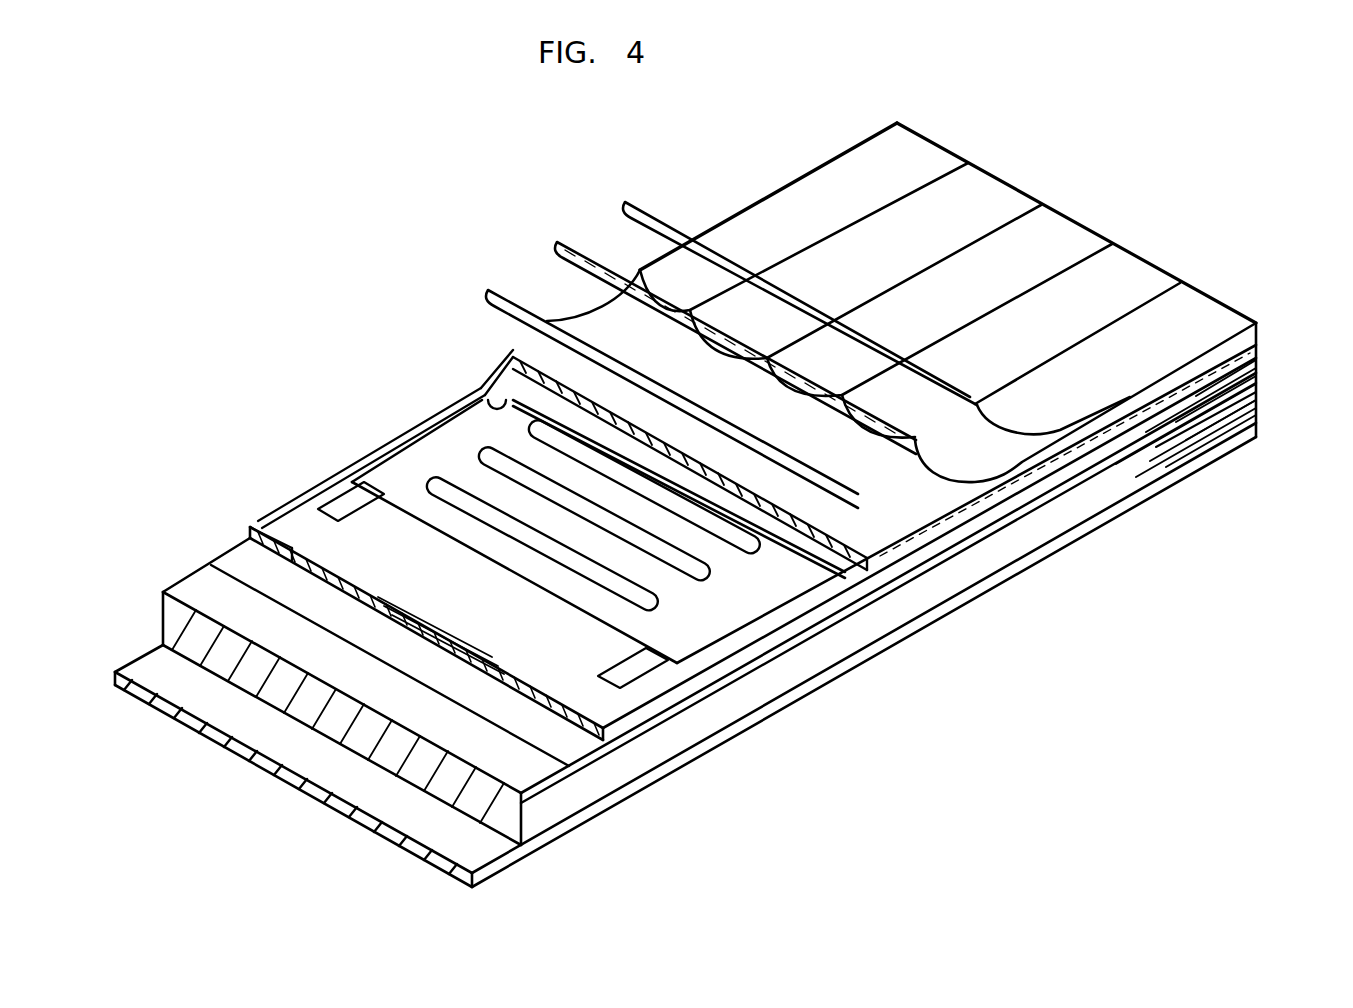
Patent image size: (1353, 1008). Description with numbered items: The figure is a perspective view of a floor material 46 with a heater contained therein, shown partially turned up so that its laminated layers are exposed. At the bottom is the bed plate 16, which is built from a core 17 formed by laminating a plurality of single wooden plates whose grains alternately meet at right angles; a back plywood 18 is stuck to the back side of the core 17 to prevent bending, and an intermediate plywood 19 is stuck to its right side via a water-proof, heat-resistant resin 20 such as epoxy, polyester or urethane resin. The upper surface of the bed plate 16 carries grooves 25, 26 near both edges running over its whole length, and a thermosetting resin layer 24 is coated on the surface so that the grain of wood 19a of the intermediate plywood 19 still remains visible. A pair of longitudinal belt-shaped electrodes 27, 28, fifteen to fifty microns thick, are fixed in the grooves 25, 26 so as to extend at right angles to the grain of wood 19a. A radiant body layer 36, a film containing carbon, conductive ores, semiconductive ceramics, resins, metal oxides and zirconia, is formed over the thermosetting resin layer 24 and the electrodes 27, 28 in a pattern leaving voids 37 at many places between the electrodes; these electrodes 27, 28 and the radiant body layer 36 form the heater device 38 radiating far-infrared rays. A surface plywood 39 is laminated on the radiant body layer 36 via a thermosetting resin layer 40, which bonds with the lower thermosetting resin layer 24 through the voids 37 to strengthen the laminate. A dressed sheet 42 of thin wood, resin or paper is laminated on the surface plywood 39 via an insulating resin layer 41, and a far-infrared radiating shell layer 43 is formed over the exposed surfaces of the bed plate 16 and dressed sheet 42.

The bed plate 16 is at (1262, 437).
The core 17 is at (637, 760).
The back plywood 18 is at (830, 685).
The intermediate plywood 19 is at (720, 672).
The grain of wood 19a is at (462, 628).
The resin 20 is at (562, 780).
The thermosetting resin layer 24 is at (350, 557).
The groove 25 is at (283, 540).
The groove 26 is at (463, 771).
The belt-shaped electrode 27 is at (335, 512).
The belt-shaped electrode 28 is at (658, 660).
The radiant body layer 36 is at (825, 600).
The voids 37 is at (547, 492).
The heater device 38 is at (367, 480).
The surface plywood 39 is at (930, 530).
The thermosetting resin layer 40 is at (481, 397).
The insulating resin layer 41 is at (510, 297).
The dressed sheet 42 is at (577, 252).
The shell layer 43 is at (672, 222).
The floor material with a heater contained therein 46 is at (1132, 236).